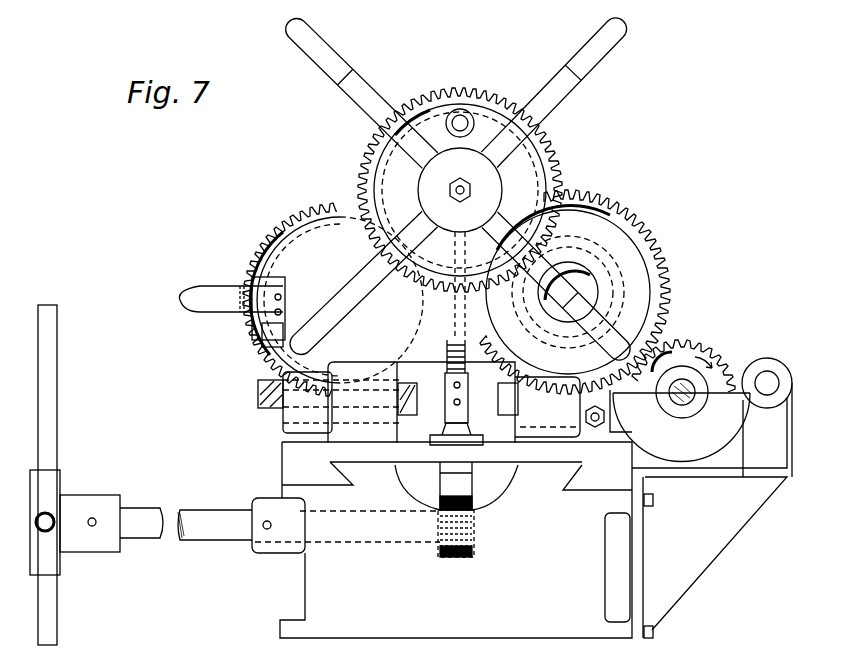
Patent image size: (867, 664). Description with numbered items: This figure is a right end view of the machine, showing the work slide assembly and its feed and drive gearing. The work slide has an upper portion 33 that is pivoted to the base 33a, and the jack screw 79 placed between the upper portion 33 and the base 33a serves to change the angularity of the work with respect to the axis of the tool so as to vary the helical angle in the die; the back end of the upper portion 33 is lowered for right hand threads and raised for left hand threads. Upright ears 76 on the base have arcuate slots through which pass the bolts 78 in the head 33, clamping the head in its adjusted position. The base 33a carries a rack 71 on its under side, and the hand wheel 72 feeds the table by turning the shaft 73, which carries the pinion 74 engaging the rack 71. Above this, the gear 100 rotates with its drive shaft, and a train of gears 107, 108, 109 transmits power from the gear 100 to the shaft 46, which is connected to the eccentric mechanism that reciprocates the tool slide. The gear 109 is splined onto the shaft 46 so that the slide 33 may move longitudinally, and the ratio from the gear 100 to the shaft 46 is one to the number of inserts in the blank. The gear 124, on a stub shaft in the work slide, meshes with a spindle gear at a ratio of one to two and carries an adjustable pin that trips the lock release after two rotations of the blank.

The work slide 33 is at (431, 375).
The base 33a is at (295, 455).
The shaft 46 is at (675, 400).
The rack 71 is at (472, 503).
The hand wheel 72 is at (48, 445).
The shaft 73 is at (355, 530).
The pinion 74 is at (445, 558).
The upright ears 76 is at (548, 412).
The bolts 78 is at (260, 398).
The jack screw 79 is at (468, 388).
The gear 100 is at (553, 148).
The gear 107 is at (590, 213).
The gear 108 is at (660, 245).
The gear 109 is at (705, 345).
The gear 124 is at (298, 213).